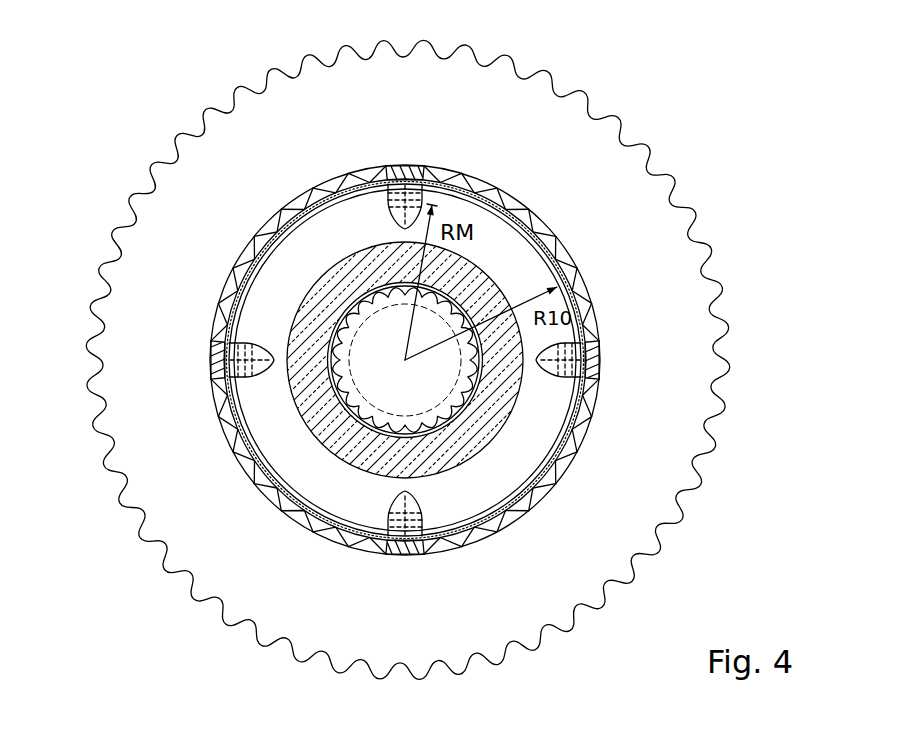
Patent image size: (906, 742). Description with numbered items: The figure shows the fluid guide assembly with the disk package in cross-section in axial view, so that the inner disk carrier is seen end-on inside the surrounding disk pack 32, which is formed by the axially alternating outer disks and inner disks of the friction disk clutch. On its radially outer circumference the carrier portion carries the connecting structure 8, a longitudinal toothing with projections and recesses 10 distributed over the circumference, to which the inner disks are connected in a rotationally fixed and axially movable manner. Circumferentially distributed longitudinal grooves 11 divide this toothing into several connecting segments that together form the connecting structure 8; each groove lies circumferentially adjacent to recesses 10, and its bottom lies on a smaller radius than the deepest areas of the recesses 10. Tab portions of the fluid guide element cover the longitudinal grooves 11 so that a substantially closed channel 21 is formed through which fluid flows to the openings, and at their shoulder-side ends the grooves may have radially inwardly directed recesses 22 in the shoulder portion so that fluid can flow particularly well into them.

The connecting structure 8 is at (512, 192).
The recesses 10 is at (567, 350).
The longitudinal grooves 11 is at (580, 342).
The channel 21 is at (408, 194).
The recesses 22 is at (253, 390).
The disk pack 32 is at (121, 188).